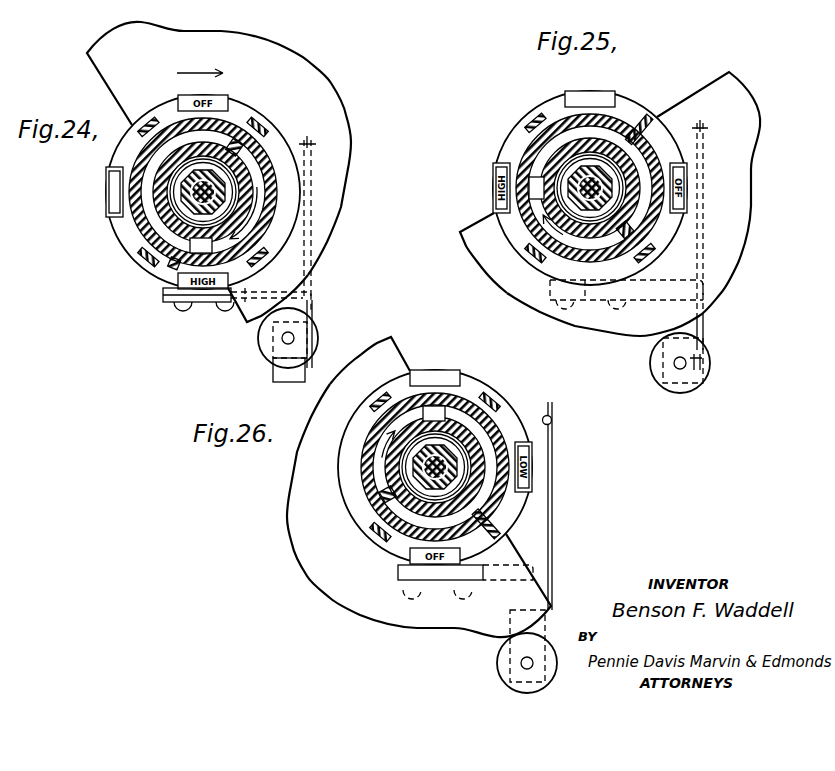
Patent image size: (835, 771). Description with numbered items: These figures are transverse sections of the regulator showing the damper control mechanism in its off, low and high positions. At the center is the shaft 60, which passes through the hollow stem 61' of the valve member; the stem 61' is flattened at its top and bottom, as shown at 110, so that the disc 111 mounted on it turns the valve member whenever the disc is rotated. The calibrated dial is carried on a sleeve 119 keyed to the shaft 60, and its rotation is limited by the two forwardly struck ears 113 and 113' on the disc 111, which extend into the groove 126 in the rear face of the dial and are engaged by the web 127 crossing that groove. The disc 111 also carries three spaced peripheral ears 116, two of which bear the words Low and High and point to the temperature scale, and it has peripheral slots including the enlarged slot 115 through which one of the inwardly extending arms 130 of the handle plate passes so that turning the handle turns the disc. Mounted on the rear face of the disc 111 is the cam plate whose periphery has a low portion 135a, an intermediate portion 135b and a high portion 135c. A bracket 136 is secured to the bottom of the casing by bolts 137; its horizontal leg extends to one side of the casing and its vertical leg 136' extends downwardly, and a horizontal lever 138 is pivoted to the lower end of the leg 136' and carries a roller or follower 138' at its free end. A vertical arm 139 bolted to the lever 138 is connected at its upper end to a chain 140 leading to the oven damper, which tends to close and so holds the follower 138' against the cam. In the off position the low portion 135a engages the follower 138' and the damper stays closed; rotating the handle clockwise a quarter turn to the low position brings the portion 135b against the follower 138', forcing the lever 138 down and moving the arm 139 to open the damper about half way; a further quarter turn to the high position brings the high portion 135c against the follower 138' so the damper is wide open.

In FIG. 24, the shaft 60 is at (295, 193).
In FIG. 25, the shaft 60 is at (590, 188).
In FIG. 26, the shaft 60 is at (495, 425).
In FIG. 24, the hollow stem 61' is at (286, 189).
In FIG. 25, the hollow stem 61' is at (533, 158).
In FIG. 26, the hollow stem 61' is at (351, 467).
In FIG. 25, the flattened portions 110 is at (539, 181).
In FIG. 24, the disc 111 is at (180, 192).
In FIG. 25, the disc 111 is at (590, 182).
In FIG. 24, the ear 113 is at (138, 282).
In FIG. 24, the ear 113' is at (287, 99).
In FIG. 25, the slot 115 is at (662, 113).
In FIG. 25, the ear 116 is at (611, 91).
In FIG. 26, the ear 116 is at (460, 362).
In FIG. 24, the sleeve 119 is at (158, 197).
In FIG. 25, the sleeve 119 is at (584, 188).
In FIG. 26, the sleeve 119 is at (463, 433).
In FIG. 24, the groove 126 is at (91, 188).
In FIG. 24, the web 127 is at (257, 192).
In FIG. 24, the arm 130 is at (109, 266).
In FIG. 24, the low portion of cam plate 135a is at (308, 298).
In FIG. 25, the low portion of cam plate 135a is at (476, 267).
In FIG. 26, the low portion of cam plate 135a is at (370, 360).
In FIG. 24, the intermediate portion of cam plate 135b is at (287, 153).
In FIG. 25, the intermediate portion of cam plate 135b is at (645, 252).
In FIG. 26, the intermediate portion of cam plate 135b is at (354, 506).
In FIG. 24, the high portion of cam plate 135c is at (129, 66).
In FIG. 25, the high portion of cam plate 135c is at (722, 115).
In FIG. 26, the high portion of cam plate 135c is at (535, 585).
In FIG. 24, the bracket 136 is at (237, 322).
In FIG. 25, the bracket 136 is at (626, 329).
In FIG. 26, the bracket 136 is at (465, 572).
In FIG. 24, the vertical leg 136' is at (344, 334).
In FIG. 25, the vertical leg 136' is at (737, 328).
In FIG. 24, the bolts 137 is at (174, 325).
In FIG. 26, the bolts 137 is at (416, 627).
In FIG. 24, the lever 138 is at (248, 376).
In FIG. 25, the lever 138 is at (671, 390).
In FIG. 24, the follower 138' is at (255, 341).
In FIG. 25, the follower 138' is at (713, 363).
In FIG. 26, the follower 138' is at (488, 651).
In FIG. 24, the vertical arm 139 is at (341, 218).
In FIG. 25, the vertical arm 139 is at (732, 238).
In FIG. 26, the vertical arm 139 is at (575, 506).
In FIG. 26, the chain 140 is at (572, 413).